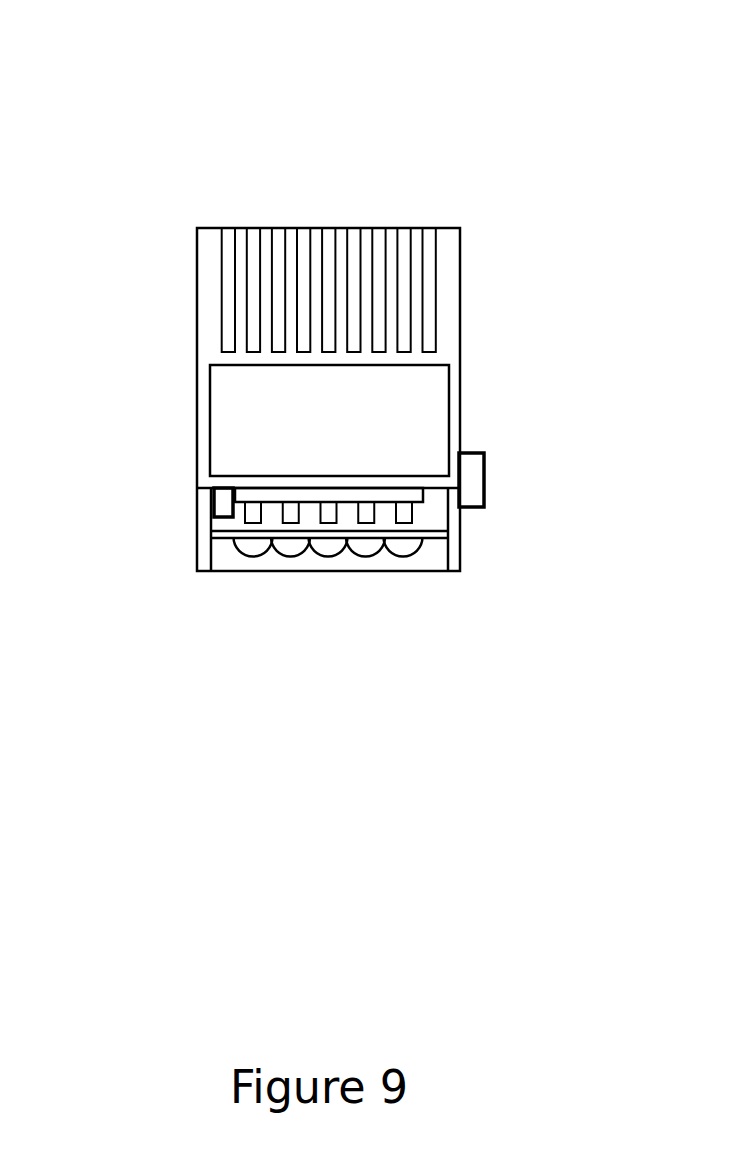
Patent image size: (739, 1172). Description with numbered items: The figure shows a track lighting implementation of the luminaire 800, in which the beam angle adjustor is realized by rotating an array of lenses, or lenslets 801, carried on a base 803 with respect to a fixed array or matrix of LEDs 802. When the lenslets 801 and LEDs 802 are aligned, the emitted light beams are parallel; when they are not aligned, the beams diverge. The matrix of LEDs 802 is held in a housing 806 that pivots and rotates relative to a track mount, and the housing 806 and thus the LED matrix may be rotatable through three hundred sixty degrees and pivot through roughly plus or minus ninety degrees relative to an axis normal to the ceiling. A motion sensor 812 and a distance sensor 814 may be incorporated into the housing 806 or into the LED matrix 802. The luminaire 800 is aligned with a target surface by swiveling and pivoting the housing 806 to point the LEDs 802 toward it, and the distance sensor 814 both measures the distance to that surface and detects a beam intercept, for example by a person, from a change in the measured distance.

The luminaire 800 is at (141, 116).
The housing 806 is at (197, 264).
The distance sensor 814 is at (213, 508).
The LEDs 802 is at (245, 517).
The lenses (lenslets) 801 is at (243, 556).
The base 803 is at (435, 537).
The motion sensor 812 is at (477, 488).